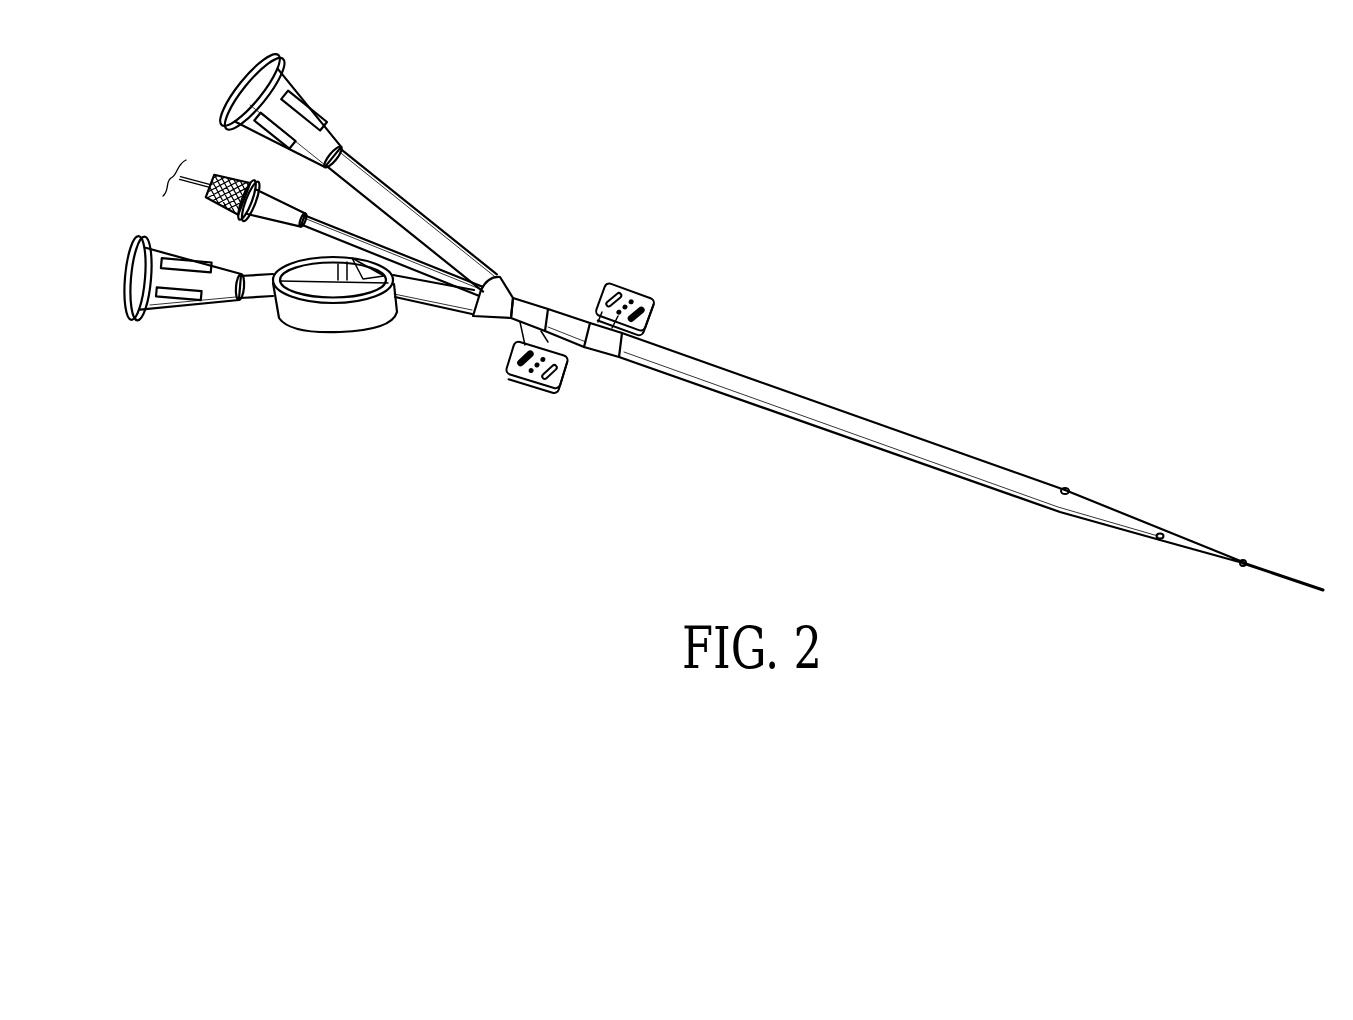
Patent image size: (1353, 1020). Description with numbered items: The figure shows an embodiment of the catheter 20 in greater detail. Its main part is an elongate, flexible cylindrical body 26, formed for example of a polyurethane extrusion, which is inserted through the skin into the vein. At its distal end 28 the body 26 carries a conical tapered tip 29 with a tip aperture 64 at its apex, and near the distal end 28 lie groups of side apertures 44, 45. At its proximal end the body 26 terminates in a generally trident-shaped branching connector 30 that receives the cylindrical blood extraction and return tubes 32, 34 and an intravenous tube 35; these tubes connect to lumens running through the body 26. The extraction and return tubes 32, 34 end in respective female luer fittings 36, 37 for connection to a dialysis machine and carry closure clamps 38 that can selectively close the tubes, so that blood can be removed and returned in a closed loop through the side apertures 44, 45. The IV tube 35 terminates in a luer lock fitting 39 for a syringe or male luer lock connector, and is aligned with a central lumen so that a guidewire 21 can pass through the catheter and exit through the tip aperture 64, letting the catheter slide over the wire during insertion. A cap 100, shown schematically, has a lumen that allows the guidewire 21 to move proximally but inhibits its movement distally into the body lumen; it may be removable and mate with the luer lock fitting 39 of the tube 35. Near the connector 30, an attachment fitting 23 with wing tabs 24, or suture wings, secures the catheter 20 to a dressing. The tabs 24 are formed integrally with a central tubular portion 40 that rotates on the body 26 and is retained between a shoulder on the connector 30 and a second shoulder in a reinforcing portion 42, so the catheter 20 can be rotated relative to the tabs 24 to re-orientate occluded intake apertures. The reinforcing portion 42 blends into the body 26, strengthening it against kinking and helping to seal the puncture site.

The catheter 20 is at (779, 334).
The guidewire 21 is at (1290, 575).
The attachment fitting 23 is at (565, 310).
The wing tabs 24 is at (622, 292).
The cylindrical body 26 is at (858, 462).
The distal end 28 is at (1130, 481).
The conical tapered tip 29 is at (1247, 560).
The trident-shaped branching connector 30 is at (493, 285).
The blood extraction tube 32 is at (388, 180).
The blood return tube 34 is at (258, 297).
The intravenous (IV) tube 35 is at (356, 237).
The female luer fitting 36 is at (128, 310).
The female luer fitting 37 is at (258, 63).
The closure clamp 38 is at (348, 332).
The luer lock fitting 39 is at (227, 172).
The central tubular portion 40 is at (540, 332).
The reinforcing portion 42 is at (601, 352).
The side apertures 44 is at (1088, 490).
The side apertures 45 is at (1157, 540).
The tip aperture 64 is at (1244, 568).
The cap 100 is at (207, 183).